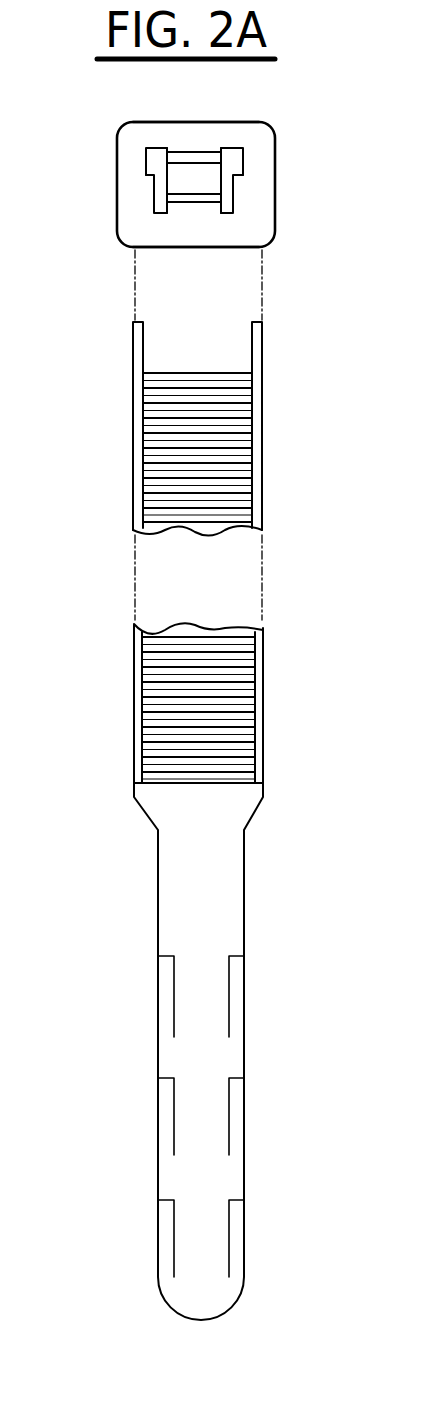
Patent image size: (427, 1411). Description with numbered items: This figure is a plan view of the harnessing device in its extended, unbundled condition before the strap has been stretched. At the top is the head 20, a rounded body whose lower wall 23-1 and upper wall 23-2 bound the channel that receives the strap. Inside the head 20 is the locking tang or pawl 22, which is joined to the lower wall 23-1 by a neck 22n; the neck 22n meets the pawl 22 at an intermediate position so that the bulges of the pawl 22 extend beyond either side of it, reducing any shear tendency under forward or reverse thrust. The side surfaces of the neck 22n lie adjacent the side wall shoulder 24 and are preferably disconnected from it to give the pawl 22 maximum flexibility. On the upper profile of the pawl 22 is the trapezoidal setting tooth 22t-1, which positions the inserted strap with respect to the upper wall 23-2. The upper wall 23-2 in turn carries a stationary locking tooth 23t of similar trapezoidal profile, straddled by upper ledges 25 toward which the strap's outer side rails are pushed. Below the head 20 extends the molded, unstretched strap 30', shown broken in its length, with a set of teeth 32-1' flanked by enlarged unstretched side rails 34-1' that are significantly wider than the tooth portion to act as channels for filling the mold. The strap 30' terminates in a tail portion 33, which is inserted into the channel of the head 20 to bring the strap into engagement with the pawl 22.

The head 20 is at (203, 253).
The upper wall 23-2 is at (257, 135).
The lower wall 23-1 is at (255, 228).
The locking tooth 23t is at (195, 151).
The upper ledges 25 is at (145, 147).
The side wall shoulder 24 is at (150, 197).
The locking tang or pawl 22 is at (207, 183).
The setting tooth 22t-1 is at (208, 169).
The neck 22n is at (192, 205).
The strap 30' is at (203, 821).
The set of teeth 32-1' is at (243, 447).
The unstretched side rails 34-1' is at (199, 708).
The tail portion 33 is at (252, 1099).